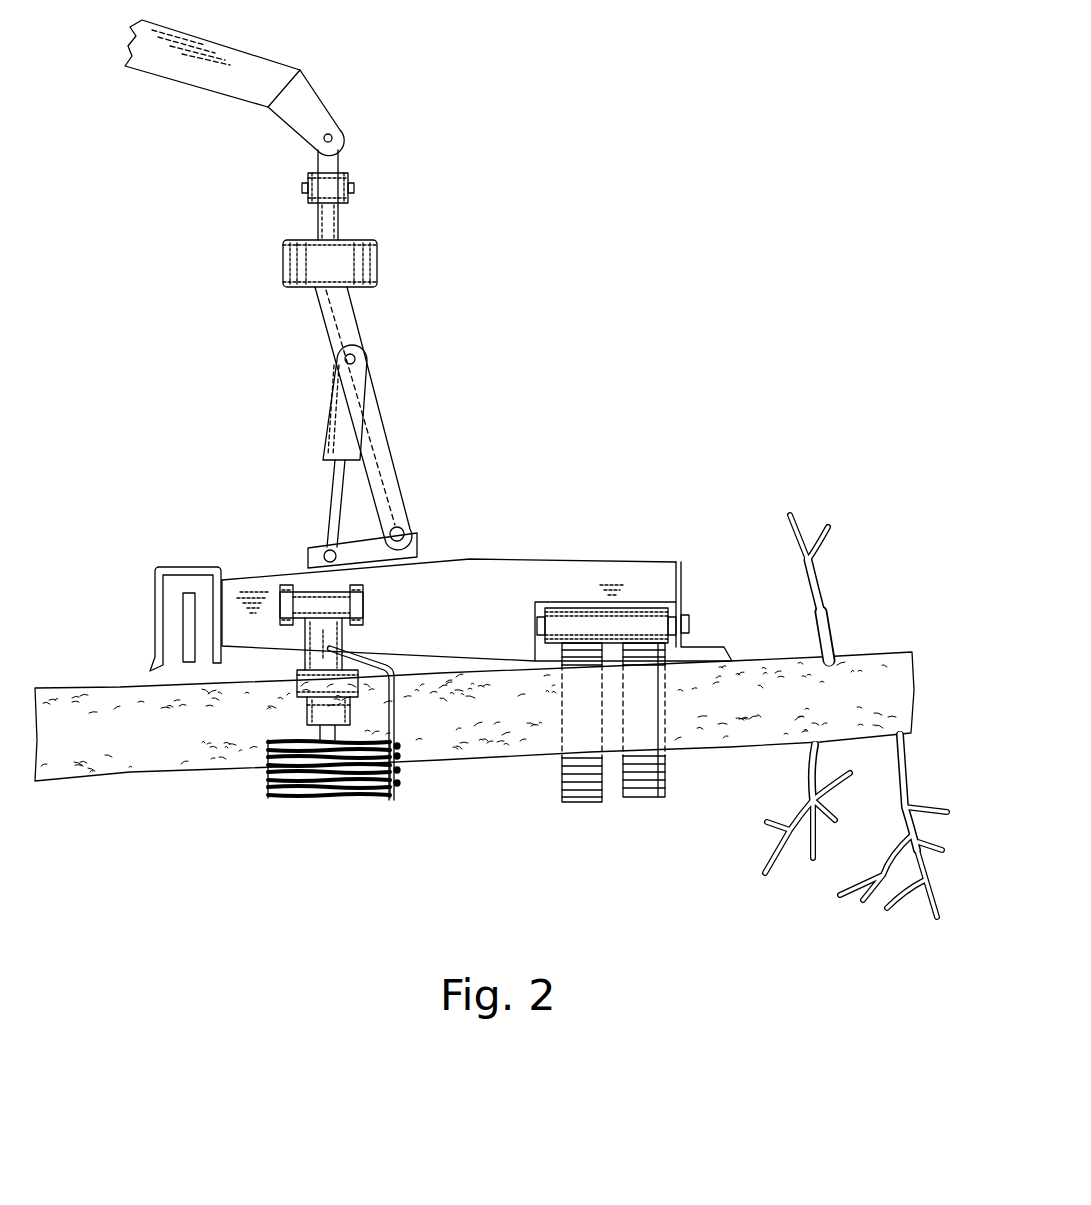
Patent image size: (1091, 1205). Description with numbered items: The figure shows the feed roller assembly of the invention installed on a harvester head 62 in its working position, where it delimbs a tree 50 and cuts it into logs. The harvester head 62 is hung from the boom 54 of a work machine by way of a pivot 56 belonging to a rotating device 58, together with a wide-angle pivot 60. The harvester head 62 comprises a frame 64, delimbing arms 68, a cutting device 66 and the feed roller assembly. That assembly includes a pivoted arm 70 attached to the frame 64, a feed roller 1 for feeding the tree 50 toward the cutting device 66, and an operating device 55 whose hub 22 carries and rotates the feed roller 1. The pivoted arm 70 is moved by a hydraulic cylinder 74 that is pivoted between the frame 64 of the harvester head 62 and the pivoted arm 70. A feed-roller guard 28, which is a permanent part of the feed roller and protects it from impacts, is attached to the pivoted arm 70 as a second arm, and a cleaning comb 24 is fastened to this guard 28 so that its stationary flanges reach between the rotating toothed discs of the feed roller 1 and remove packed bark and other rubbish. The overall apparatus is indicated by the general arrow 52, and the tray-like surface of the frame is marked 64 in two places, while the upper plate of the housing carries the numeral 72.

The feed roller 1 is at (267, 800).
The hub 22 is at (285, 738).
The cleaning comb 24 is at (402, 793).
The feed-roller guard 28 is at (360, 700).
The tree 50 is at (174, 741).
The planting apparatus 52 is at (452, 467).
The boom 54 is at (195, 65).
The operating device 55 is at (313, 725).
The pivot 56 is at (327, 197).
The rotating device 58 is at (297, 357).
The wide-angle pivot 60 is at (293, 510).
The harvester head 62 is at (477, 553).
The frame 64 is at (441, 622).
The cutting device 66 is at (190, 623).
The delimbing arms 68 is at (588, 770).
The pivoted arm 70 is at (340, 633).
The top plate 72 is at (483, 577).
The hydraulic cylinder 74 is at (307, 638).